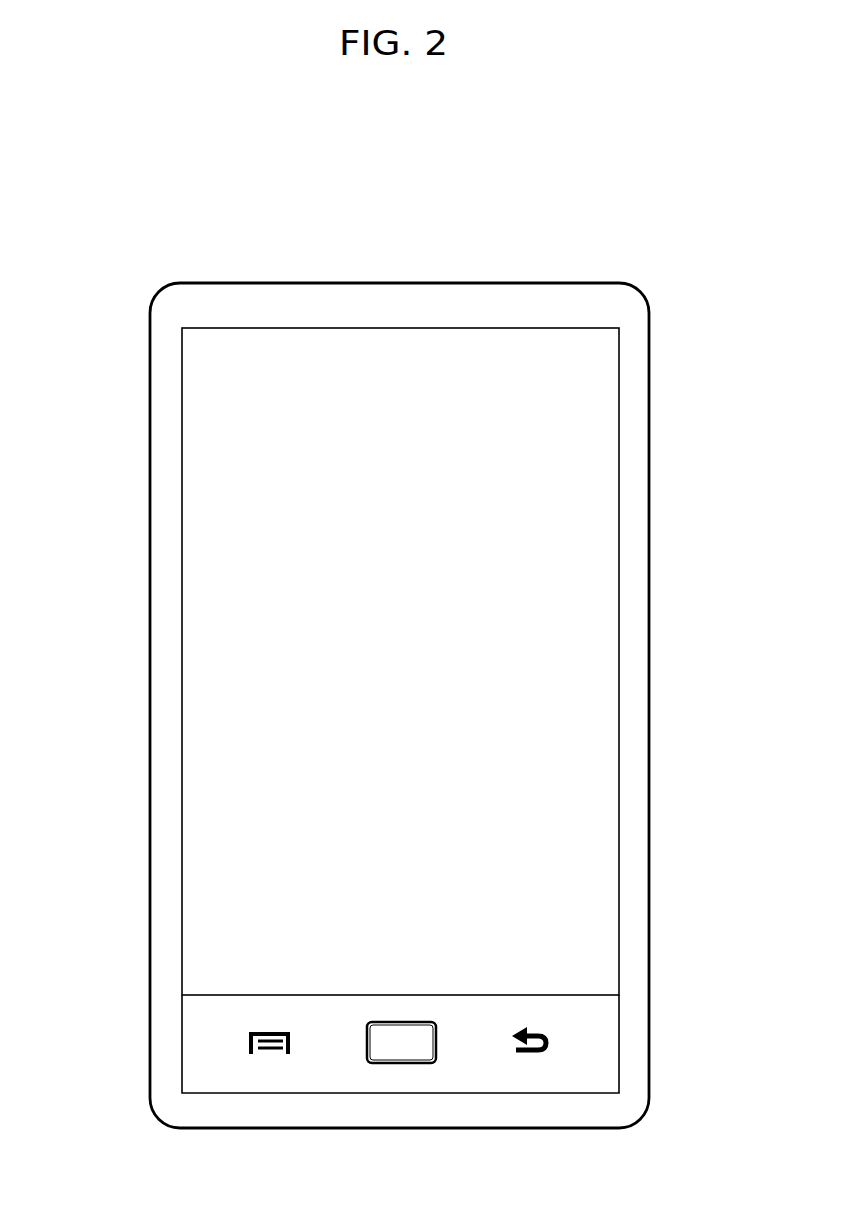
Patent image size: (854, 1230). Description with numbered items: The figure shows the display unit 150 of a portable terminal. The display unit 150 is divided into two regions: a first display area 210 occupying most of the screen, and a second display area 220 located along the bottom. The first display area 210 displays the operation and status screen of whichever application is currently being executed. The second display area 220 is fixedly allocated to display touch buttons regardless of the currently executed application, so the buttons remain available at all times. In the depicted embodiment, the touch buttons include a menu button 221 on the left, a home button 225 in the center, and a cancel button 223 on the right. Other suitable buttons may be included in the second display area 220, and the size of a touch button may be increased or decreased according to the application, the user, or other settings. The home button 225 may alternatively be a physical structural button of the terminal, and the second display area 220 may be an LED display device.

The display unit 150 is at (610, 204).
The first display area 210 is at (227, 583).
The second display area 220 is at (604, 1041).
The menu button 221 is at (267, 1054).
The cancel button 223 is at (528, 1054).
The home button 225 is at (402, 1053).